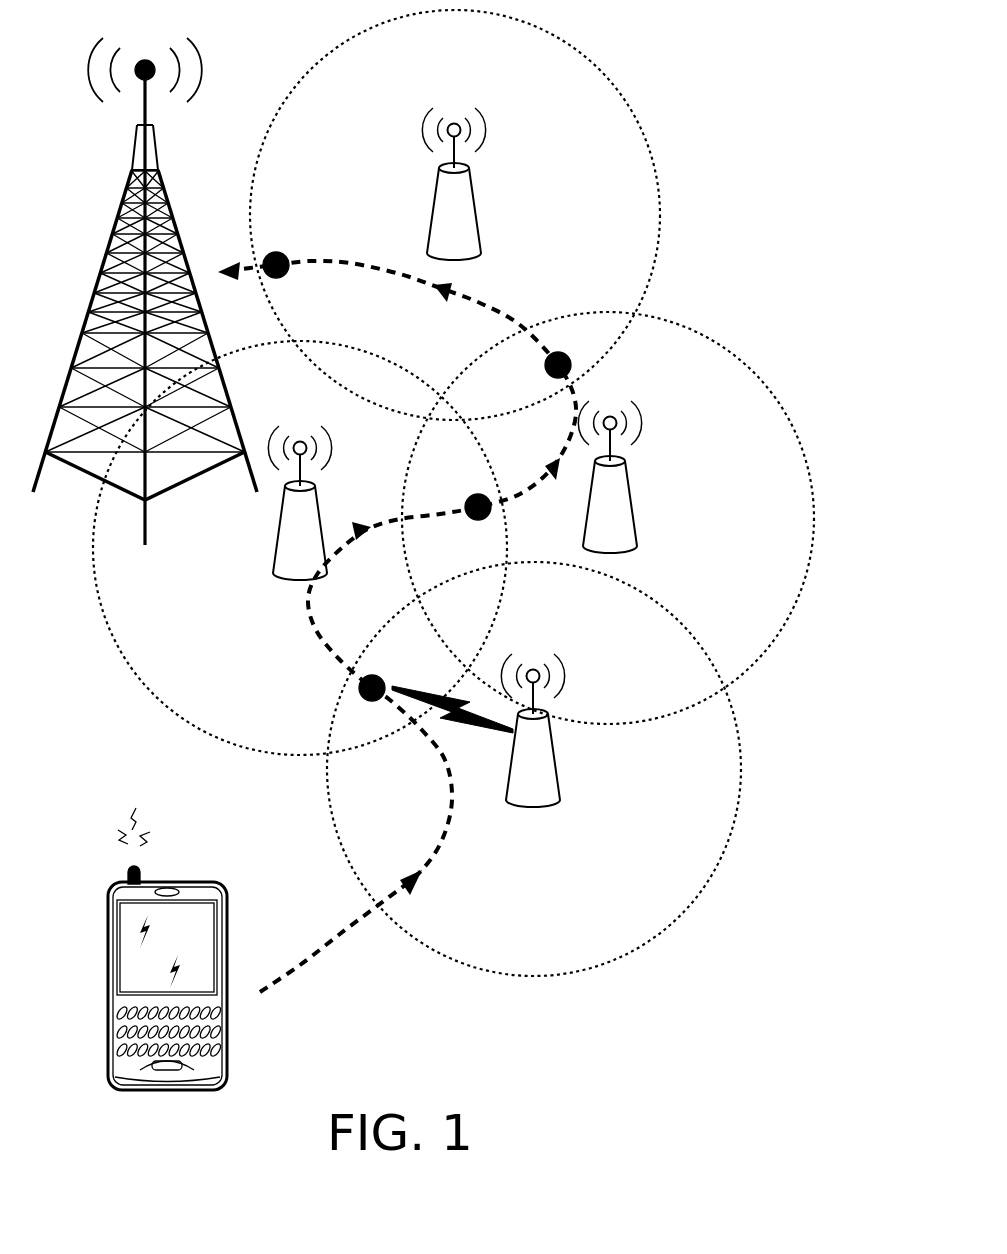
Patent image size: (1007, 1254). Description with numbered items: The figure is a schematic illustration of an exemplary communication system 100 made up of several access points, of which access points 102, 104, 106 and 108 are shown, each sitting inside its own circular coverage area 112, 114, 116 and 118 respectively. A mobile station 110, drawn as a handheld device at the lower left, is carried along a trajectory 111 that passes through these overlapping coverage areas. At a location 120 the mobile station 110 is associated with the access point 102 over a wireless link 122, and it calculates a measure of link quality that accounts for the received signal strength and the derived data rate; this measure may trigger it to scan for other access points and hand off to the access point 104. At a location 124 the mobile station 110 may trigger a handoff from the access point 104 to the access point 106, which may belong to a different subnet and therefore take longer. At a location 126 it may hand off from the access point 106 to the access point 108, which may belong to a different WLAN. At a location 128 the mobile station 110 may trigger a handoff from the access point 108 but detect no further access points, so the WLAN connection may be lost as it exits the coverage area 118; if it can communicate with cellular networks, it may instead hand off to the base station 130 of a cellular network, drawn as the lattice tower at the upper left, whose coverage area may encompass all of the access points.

The communication system 100 is at (688, 122).
The access point 102 is at (533, 768).
The access point 104 is at (300, 548).
The access point 106 is at (612, 520).
The access point 108 is at (455, 220).
The mobile station 110 is at (107, 1013).
The trajectory 111 is at (313, 958).
The coverage area 112 is at (552, 908).
The coverage area 114 is at (154, 650).
The coverage area 116 is at (731, 469).
The coverage area 118 is at (553, 117).
The location 120 is at (380, 675).
The wireless link 122 is at (492, 727).
The location 124 is at (468, 516).
The location 126 is at (545, 368).
The location 128 is at (283, 253).
The base station 130 is at (137, 145).